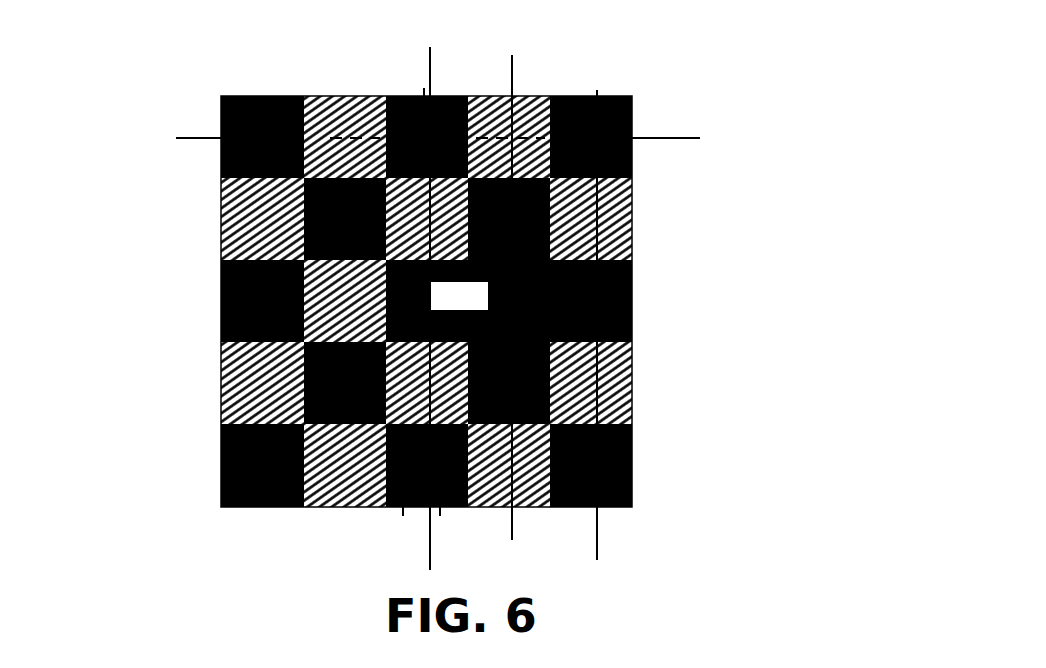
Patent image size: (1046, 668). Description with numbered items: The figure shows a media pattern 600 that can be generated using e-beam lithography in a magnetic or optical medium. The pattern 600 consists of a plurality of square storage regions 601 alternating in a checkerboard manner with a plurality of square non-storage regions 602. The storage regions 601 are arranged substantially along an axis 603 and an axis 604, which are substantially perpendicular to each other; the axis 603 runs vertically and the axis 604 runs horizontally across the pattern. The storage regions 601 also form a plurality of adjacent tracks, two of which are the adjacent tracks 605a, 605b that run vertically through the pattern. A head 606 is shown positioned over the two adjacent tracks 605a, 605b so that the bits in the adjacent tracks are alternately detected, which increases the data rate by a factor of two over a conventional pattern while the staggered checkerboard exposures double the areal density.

The media pattern 600 is at (172, 77).
The storage regions 601 is at (221, 161).
The non-storage regions 602 is at (338, 88).
The axis 603 is at (600, 537).
The axis 604 is at (676, 140).
The track 605a is at (432, 52).
The track 605b is at (514, 68).
The head 606 is at (632, 330).